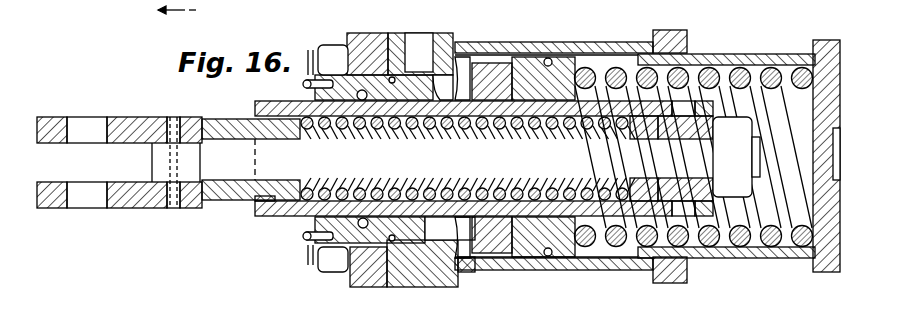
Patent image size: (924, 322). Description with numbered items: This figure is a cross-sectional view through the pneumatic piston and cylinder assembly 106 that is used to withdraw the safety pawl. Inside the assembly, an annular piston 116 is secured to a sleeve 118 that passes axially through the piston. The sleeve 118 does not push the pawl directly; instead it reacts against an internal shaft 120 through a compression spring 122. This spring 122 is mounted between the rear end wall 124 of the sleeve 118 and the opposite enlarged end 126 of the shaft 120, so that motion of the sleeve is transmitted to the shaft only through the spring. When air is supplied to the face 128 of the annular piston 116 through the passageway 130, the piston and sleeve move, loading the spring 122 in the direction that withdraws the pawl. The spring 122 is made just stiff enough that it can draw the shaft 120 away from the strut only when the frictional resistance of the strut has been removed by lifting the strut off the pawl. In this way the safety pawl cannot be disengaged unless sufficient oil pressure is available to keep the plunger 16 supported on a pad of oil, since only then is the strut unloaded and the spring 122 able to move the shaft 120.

The plunger 16 is at (191, 11).
The pneumatic piston and cylinder assembly 106 is at (588, 48).
The annular piston 116 is at (518, 264).
The sleeve 118 is at (690, 268).
The internal shaft 120 is at (737, 58).
The compression spring 122 is at (507, 116).
The rear end wall 124 is at (310, 223).
The enlarged end 126 is at (684, 148).
The face 128 is at (454, 60).
The passageway 130 is at (432, 20).